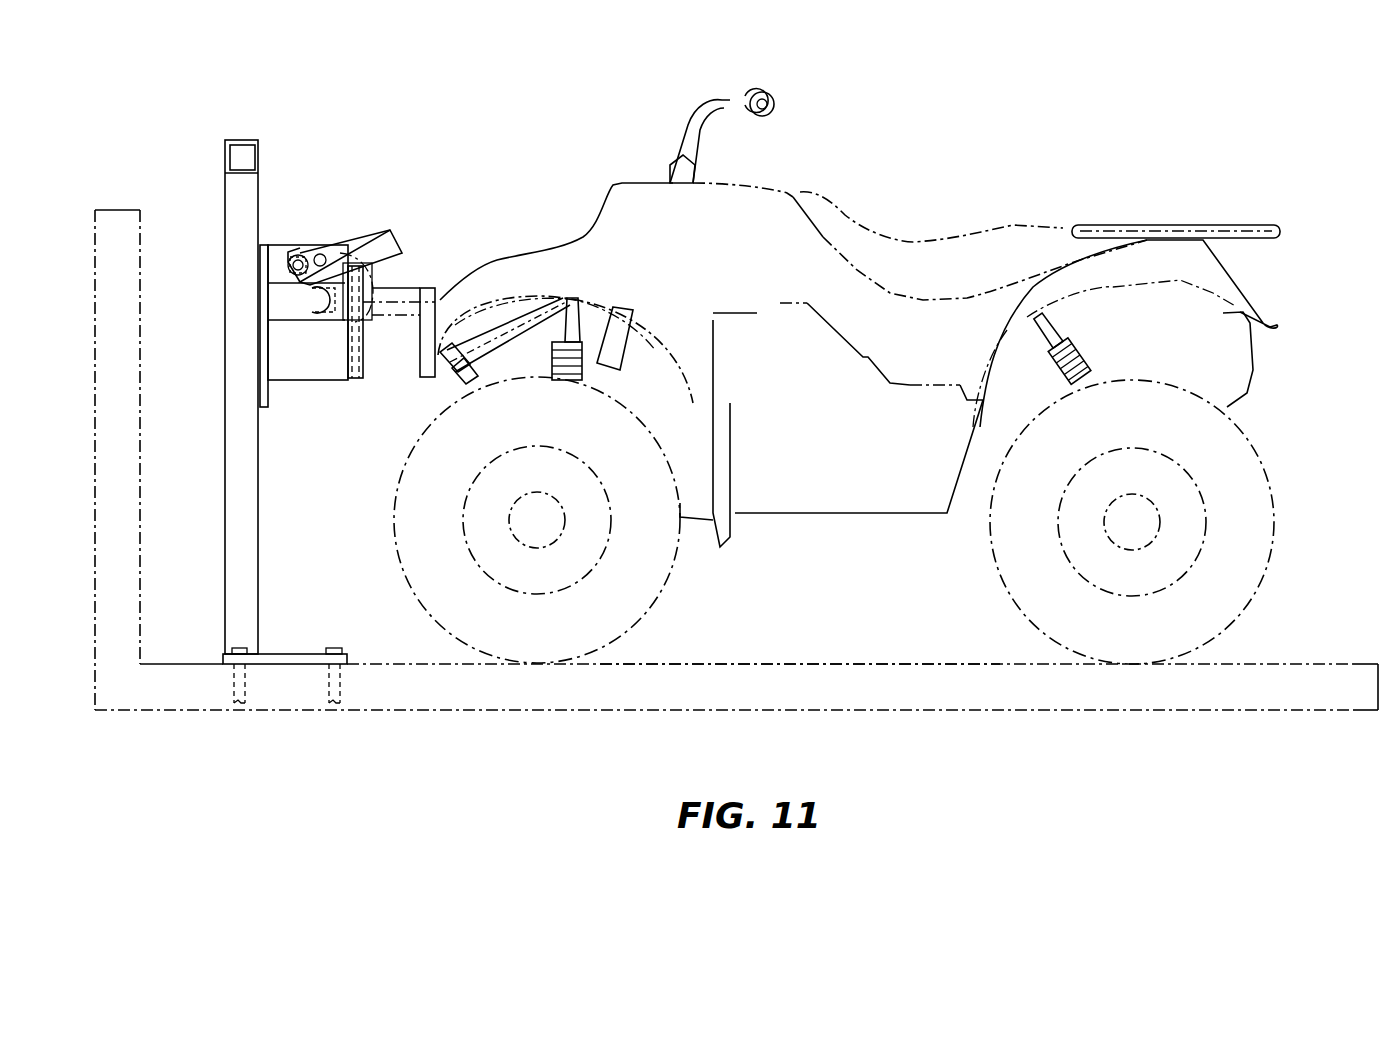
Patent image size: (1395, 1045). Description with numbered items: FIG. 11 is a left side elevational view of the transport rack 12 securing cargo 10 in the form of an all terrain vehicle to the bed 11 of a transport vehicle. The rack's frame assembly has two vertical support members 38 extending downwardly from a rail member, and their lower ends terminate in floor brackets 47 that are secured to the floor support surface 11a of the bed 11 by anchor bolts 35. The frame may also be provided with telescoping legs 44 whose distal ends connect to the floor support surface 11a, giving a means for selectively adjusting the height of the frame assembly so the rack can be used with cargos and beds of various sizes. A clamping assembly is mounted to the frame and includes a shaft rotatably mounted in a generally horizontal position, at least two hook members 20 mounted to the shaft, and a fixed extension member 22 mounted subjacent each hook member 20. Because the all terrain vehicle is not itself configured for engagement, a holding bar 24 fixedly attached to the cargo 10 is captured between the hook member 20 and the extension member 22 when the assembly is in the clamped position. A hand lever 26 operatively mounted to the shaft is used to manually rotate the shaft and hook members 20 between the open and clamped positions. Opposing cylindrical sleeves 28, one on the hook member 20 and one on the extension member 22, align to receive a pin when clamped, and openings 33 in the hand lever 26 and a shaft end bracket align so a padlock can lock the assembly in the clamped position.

The cargo 10 is at (870, 188).
The bed 11 is at (1337, 650).
The floor support surface 11a is at (893, 677).
The transport rack 12 is at (309, 406).
The hook member 20 is at (340, 270).
The fixed extension member 22 is at (290, 382).
The holding bar 24 is at (305, 301).
The hand lever 26 is at (378, 244).
The cylindrical sleeve 28 is at (366, 274).
The opening 33 is at (320, 253).
The anchor bolt 35 is at (240, 707).
The vertical support member 38 is at (232, 197).
The telescoping leg 44 is at (271, 464).
The floor bracket 47 is at (313, 658).